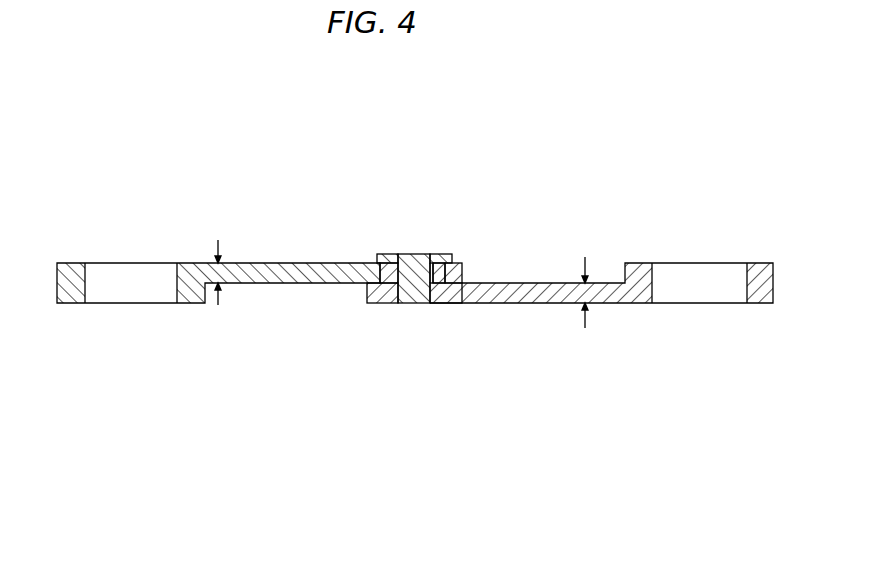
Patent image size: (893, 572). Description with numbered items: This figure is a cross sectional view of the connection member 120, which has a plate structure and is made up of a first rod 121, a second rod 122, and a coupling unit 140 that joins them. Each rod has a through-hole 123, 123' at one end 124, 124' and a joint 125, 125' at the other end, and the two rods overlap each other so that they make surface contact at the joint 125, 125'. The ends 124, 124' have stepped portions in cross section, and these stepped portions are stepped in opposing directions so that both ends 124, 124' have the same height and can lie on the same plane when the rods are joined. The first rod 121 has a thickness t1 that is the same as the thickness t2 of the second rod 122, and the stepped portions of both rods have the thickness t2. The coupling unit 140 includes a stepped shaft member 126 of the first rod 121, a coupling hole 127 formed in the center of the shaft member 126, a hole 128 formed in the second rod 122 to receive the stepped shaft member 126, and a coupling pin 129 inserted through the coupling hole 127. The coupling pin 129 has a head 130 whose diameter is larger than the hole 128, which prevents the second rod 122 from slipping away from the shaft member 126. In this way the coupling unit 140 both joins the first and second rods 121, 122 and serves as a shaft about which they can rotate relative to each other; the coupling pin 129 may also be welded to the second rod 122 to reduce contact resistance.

The connection member 120 is at (223, 155).
The first rod 121 is at (534, 304).
The second rod 122 is at (271, 262).
The through-hole 123 is at (699, 308).
The through-hole 123' is at (131, 308).
The end of first rod 124 is at (756, 259).
The end of second rod 124' is at (66, 259).
The joint 125 is at (369, 324).
The joint 125' is at (486, 256).
The stepped shaft member 126 is at (447, 263).
The coupling hole 127 is at (411, 254).
The hole 128 is at (380, 263).
The coupling pin 129 is at (418, 304).
The head 130 is at (387, 255).
The coupling unit 140 is at (398, 336).
The thickness of first rod t1 is at (599, 300).
The thickness of second rod t2 is at (232, 280).